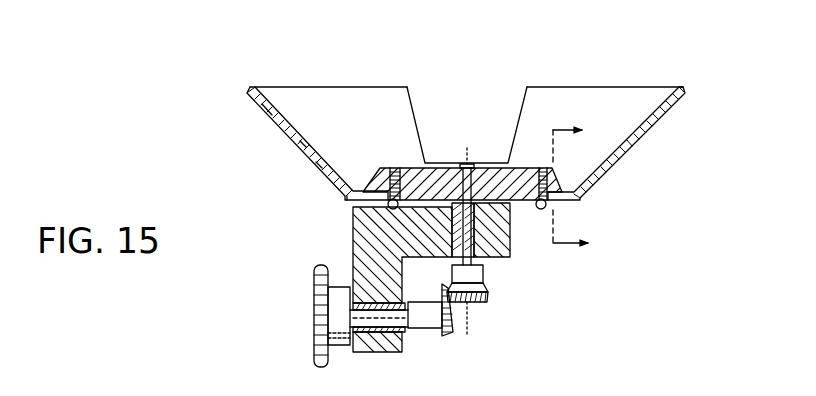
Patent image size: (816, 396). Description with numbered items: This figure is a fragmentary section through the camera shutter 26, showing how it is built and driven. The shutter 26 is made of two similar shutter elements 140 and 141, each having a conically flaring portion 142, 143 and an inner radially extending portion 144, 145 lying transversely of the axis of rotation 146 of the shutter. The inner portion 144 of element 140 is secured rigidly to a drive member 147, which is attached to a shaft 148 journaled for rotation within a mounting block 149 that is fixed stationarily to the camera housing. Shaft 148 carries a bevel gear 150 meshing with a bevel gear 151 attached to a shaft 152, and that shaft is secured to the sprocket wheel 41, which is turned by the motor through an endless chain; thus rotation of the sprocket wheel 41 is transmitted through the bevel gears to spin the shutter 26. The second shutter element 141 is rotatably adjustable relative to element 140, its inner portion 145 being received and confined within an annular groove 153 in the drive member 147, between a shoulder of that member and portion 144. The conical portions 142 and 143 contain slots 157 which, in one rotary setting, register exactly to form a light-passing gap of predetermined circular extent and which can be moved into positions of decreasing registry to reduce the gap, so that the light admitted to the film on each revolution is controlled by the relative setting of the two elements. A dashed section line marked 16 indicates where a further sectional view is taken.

The shutter 26 is at (574, 80).
The slots 157 is at (410, 105).
The second shutter element 141 is at (267, 103).
The first shutter element 140 is at (272, 115).
The conically flaring portion 143 is at (306, 172).
The conically flaring portion 142 is at (317, 167).
The inner radially extending portion 145 is at (361, 192).
The drive member 147 is at (522, 183).
The annular groove 153 is at (557, 178).
The section line 16- 16 is at (586, 190).
The inner radially extending portion 144 is at (347, 202).
The mounting block 149 is at (353, 246).
The shaft 148 is at (478, 233).
The bevel gear 150 is at (485, 280).
The axis of rotation 146 is at (466, 315).
The bevel gear 151 is at (422, 305).
The shaft 152 is at (393, 318).
The sprocket wheel 41 is at (317, 310).